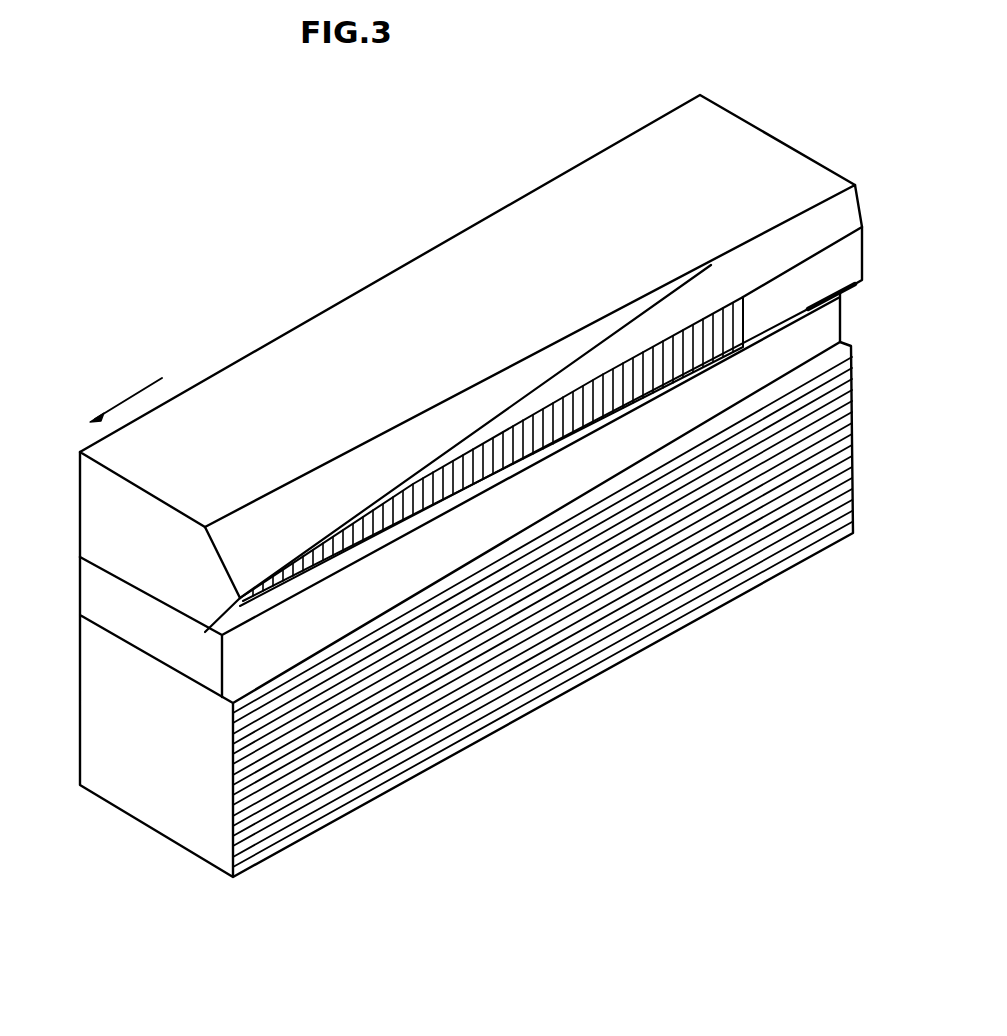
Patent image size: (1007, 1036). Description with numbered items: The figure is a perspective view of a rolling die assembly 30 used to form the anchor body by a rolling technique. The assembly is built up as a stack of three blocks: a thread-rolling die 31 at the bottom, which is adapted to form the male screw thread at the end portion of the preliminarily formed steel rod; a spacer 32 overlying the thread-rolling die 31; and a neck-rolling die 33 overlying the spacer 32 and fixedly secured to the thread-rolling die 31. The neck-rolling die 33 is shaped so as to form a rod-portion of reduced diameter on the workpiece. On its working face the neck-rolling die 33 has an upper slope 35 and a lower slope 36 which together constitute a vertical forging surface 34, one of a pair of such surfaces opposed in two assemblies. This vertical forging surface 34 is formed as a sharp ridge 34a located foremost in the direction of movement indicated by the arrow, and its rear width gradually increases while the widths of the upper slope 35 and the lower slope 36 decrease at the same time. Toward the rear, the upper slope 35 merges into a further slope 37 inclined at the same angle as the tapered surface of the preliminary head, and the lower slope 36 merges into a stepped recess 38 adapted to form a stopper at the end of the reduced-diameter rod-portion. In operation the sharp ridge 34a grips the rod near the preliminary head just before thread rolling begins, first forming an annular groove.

The rolling die assembly 30 is at (286, 318).
The thread-rolling die 31 is at (83, 738).
The spacer 32 is at (92, 588).
The neck-rolling die 33 is at (92, 514).
The vertical forging surface 34 is at (551, 415).
The sharp ridge 34a is at (240, 596).
The upper slope 35 is at (240, 518).
The lower slope 36 is at (250, 603).
The further slope 37 is at (747, 260).
The stepped recess 38 is at (808, 310).